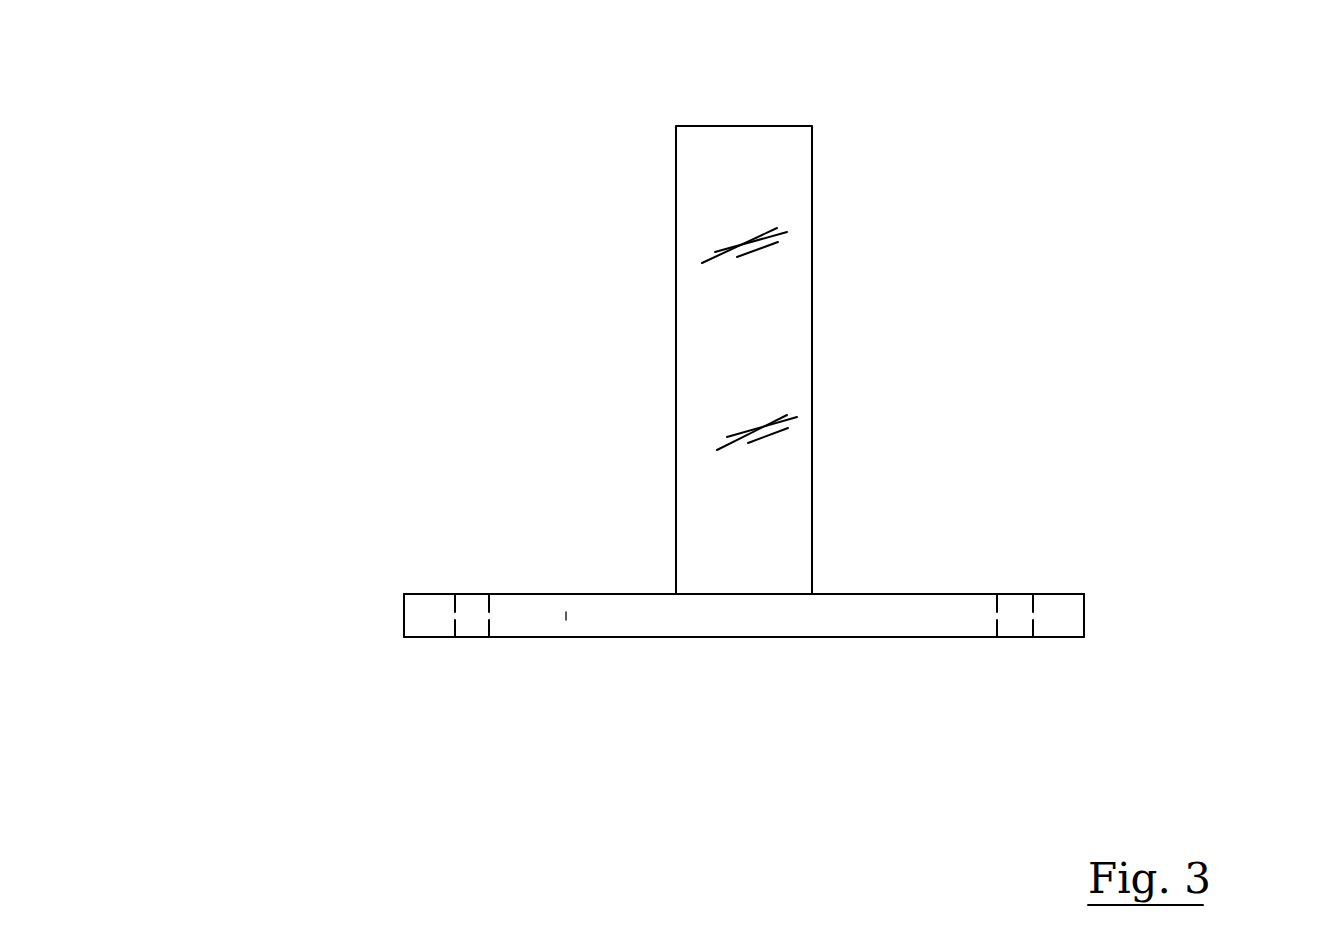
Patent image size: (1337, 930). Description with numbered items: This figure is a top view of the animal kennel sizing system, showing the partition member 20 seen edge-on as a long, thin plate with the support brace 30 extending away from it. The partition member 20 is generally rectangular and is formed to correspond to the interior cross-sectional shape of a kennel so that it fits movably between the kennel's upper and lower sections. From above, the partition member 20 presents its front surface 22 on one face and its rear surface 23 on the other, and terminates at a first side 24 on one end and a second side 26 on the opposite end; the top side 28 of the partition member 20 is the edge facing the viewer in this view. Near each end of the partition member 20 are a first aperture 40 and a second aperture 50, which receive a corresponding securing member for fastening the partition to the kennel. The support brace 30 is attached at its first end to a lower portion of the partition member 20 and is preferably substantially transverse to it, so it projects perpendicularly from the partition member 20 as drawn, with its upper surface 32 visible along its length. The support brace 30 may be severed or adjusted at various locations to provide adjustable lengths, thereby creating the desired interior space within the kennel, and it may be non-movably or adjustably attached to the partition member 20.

The partition member 20 is at (1057, 594).
The front surface 22 is at (787, 637).
The rear surface 23 is at (535, 593).
The first side 24 is at (1084, 608).
The second side 26 is at (403, 610).
The top side 28 is at (566, 612).
The support brace 30 is at (815, 126).
The upper surface 32 is at (673, 210).
The first aperture 40 is at (474, 627).
The second aperture 50 is at (1018, 620).